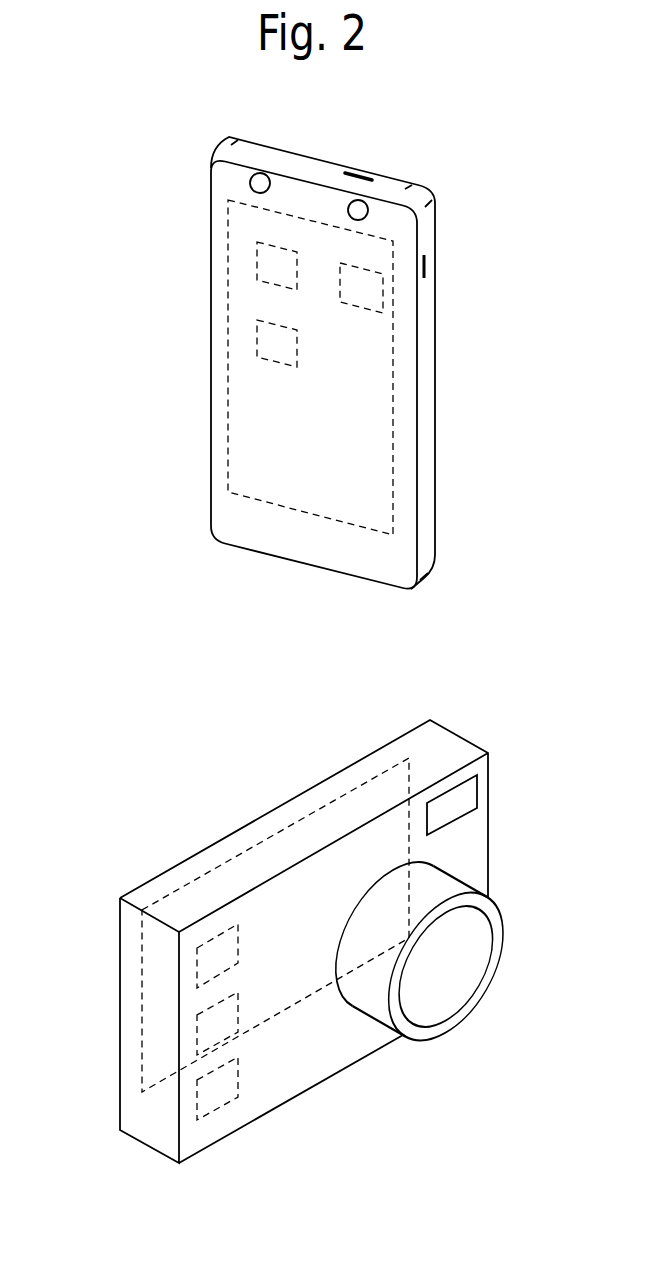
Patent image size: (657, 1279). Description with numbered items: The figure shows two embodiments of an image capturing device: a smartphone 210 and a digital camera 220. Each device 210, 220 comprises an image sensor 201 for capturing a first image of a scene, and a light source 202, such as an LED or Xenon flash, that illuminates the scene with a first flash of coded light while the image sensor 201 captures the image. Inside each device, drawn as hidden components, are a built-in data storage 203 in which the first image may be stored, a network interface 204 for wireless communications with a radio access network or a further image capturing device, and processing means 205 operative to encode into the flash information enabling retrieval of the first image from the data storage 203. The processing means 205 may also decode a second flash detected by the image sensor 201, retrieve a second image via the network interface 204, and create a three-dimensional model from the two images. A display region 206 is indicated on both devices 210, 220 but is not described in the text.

The image sensor 201 is at (263, 175).
The light source 202 is at (364, 201).
The built-in data storage 203 is at (380, 288).
The network interface 204 is at (258, 263).
The processing means 205 is at (258, 345).
The display 206 is at (393, 448).
The smartphone 210 is at (192, 133).
The digital camera 220 is at (258, 753).